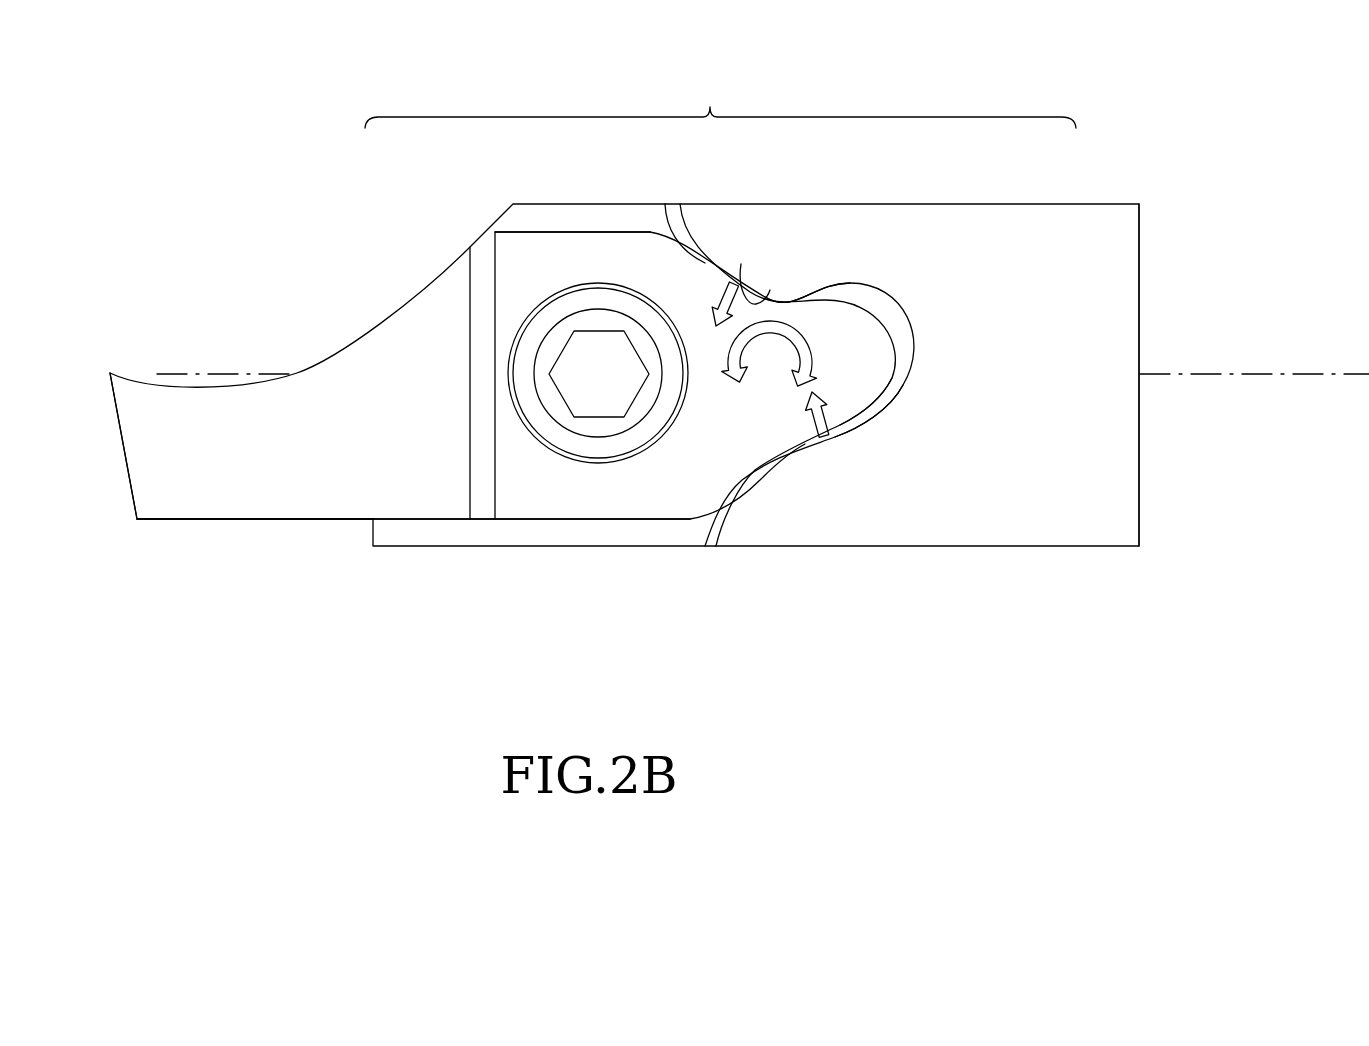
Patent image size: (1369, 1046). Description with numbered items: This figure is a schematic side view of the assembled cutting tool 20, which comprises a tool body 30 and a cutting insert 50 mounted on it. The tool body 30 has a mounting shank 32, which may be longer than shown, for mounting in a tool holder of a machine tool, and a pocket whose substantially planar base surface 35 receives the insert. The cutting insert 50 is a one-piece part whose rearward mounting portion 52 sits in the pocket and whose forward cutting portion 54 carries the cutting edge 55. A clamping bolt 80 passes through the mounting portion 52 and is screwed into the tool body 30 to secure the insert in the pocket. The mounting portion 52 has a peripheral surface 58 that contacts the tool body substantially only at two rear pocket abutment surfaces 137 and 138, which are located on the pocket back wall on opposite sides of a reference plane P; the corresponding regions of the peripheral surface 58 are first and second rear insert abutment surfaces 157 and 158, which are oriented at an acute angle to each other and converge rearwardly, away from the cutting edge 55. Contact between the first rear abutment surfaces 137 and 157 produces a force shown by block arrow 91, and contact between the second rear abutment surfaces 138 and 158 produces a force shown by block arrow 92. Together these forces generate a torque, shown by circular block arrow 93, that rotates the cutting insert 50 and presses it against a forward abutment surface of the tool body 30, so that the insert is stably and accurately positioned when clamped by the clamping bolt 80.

The cutting tool 20 is at (714, 100).
The tool body 30 is at (972, 180).
The mounting shank 32 is at (1118, 295).
The base surface 35 is at (630, 226).
The cutting insert 50 is at (432, 240).
The mounting portion 52 is at (552, 502).
The cutting portion 54 is at (165, 528).
The cutting edge 55 is at (110, 372).
The peripheral surface 58 is at (537, 232).
The clamping bolt 80 is at (598, 450).
The block arrow 91 is at (720, 298).
The block arrow 92 is at (803, 437).
The circular block arrow 93 is at (810, 348).
The first rear pocket abutment surface 137 is at (741, 264).
The second rear pocket abutment surface 138 is at (870, 410).
The first rear insert abutment surface 157 is at (768, 293).
The second rear insert abutment surface 158 is at (872, 413).
The reference plane P is at (1348, 374).